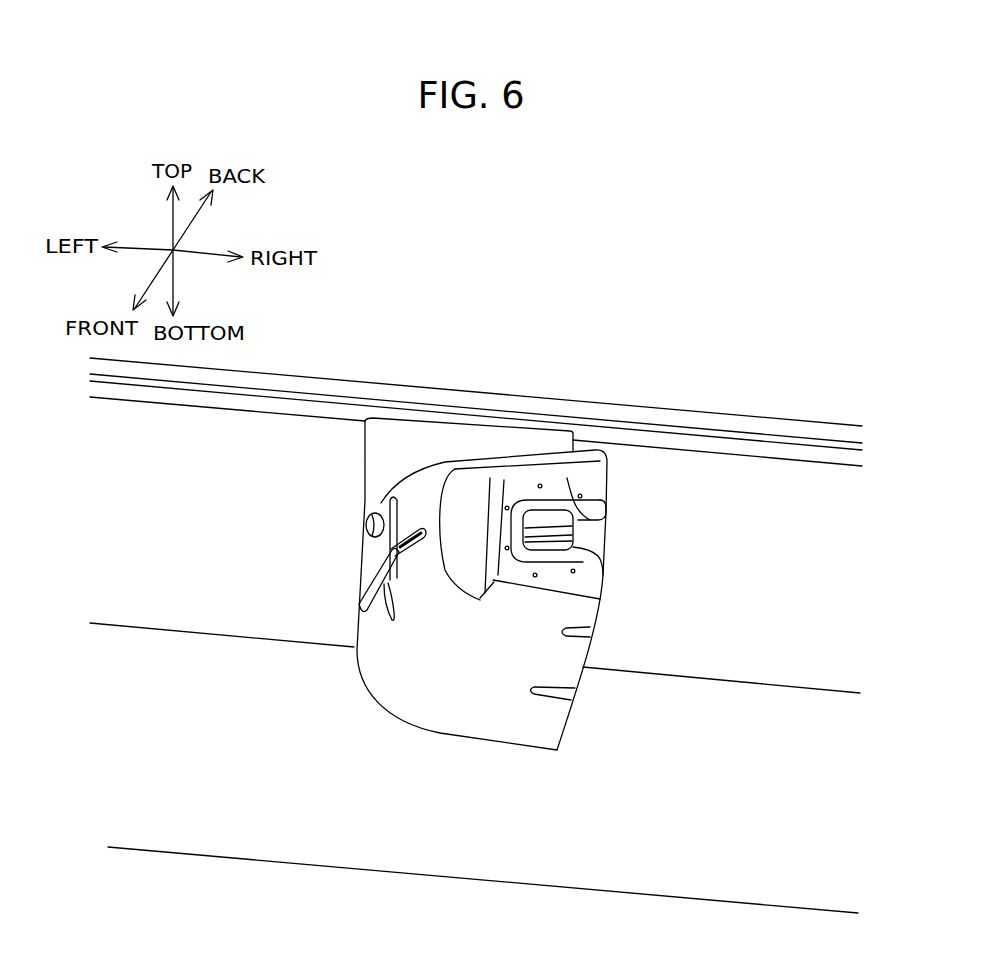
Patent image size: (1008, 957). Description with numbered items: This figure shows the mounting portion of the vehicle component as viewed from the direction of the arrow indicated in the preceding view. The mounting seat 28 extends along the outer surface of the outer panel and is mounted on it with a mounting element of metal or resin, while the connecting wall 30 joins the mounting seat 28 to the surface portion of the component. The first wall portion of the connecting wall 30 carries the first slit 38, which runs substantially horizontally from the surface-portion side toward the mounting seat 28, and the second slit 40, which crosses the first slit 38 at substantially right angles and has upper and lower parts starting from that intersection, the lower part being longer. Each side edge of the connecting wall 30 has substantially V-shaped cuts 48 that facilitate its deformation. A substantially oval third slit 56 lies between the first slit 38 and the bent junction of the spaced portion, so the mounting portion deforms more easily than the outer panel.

The mounting seat 28 is at (607, 523).
The connecting wall 30 is at (366, 705).
The first slit 38 is at (359, 598).
The second slit 40 is at (388, 547).
The cut 48 is at (589, 633).
The third slit 56 is at (366, 526).